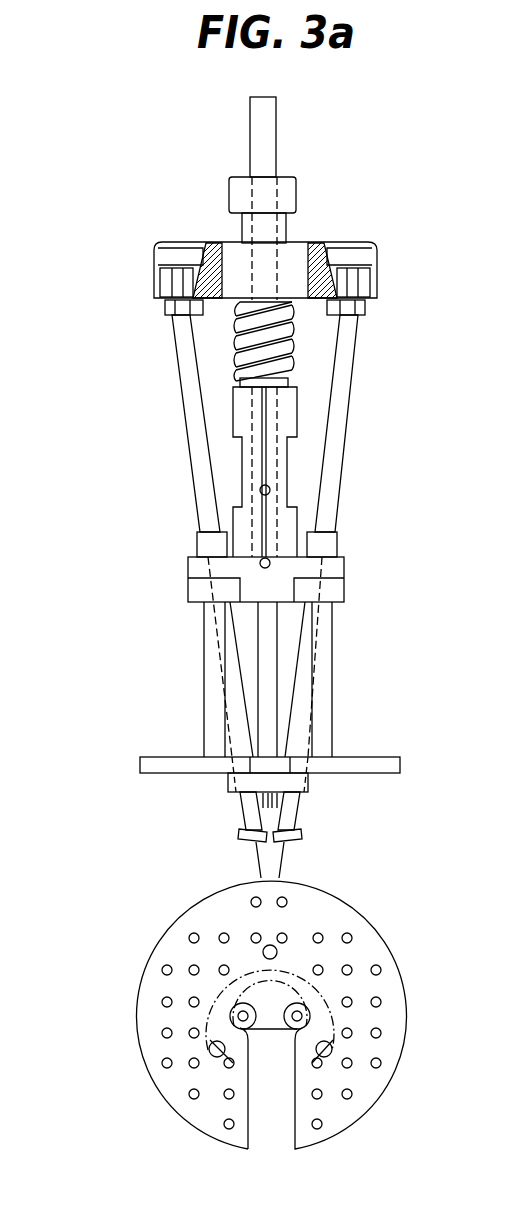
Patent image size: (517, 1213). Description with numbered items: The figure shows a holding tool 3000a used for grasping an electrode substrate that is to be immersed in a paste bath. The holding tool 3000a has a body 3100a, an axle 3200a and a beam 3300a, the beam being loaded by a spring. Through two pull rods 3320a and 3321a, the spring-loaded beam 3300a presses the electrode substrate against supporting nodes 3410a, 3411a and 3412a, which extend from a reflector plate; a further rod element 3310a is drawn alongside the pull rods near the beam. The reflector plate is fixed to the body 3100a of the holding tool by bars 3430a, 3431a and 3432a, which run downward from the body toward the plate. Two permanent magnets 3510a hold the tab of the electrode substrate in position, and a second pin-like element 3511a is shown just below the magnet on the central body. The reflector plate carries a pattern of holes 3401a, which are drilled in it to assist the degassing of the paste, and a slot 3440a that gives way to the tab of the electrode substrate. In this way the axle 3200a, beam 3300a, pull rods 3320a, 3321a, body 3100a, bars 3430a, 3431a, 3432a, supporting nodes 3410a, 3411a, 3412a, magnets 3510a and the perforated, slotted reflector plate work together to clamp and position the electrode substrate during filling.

The holding tool 3000a is at (128, 440).
The axle 3200a is at (257, 142).
The beam 3300a is at (157, 252).
The left support rod 3310a is at (192, 355).
The pull rod 3320a is at (182, 392).
The pull rod 3321a is at (350, 367).
The body 3100a is at (240, 517).
The permanent magnet 3510a is at (270, 490).
The lower pin 3511a is at (270, 563).
The bar 3430a is at (212, 632).
The bar 3431a is at (268, 655).
The bar 3432a is at (322, 678).
The slot 3440a is at (153, 767).
The supporting node 3410a is at (240, 802).
The supporting node 3411a is at (247, 833).
The supporting node 3412a is at (258, 852).
The holes 3401a is at (352, 940).